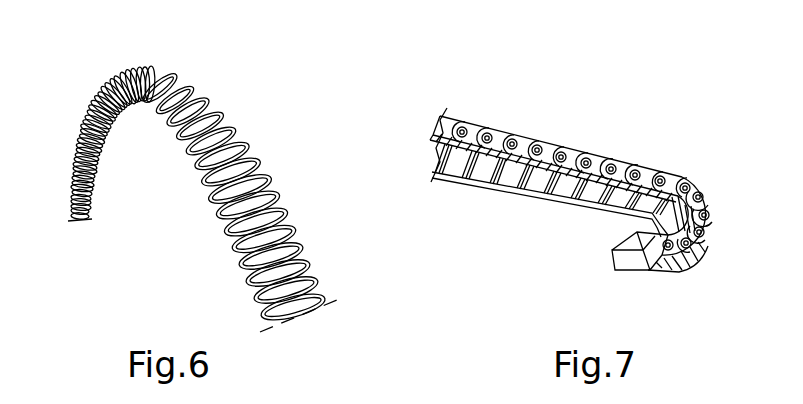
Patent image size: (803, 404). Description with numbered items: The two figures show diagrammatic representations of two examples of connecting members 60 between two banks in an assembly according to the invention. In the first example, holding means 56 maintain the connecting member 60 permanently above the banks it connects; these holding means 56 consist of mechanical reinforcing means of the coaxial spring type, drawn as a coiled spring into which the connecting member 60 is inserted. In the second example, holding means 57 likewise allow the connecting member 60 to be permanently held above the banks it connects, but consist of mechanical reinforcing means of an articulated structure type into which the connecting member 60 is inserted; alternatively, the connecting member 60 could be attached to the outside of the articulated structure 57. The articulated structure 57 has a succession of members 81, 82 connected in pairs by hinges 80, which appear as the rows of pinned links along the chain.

In FIG. 6, the holding means 56 is at (288, 215).
In FIG. 6, the connecting member 60 is at (202, 168).
In FIG. 7, the holding means 57 is at (678, 276).
In FIG. 7, the hinges 80 is at (589, 194).
In FIG. 7, the member 81 is at (495, 172).
In FIG. 7, the member 82 is at (518, 174).